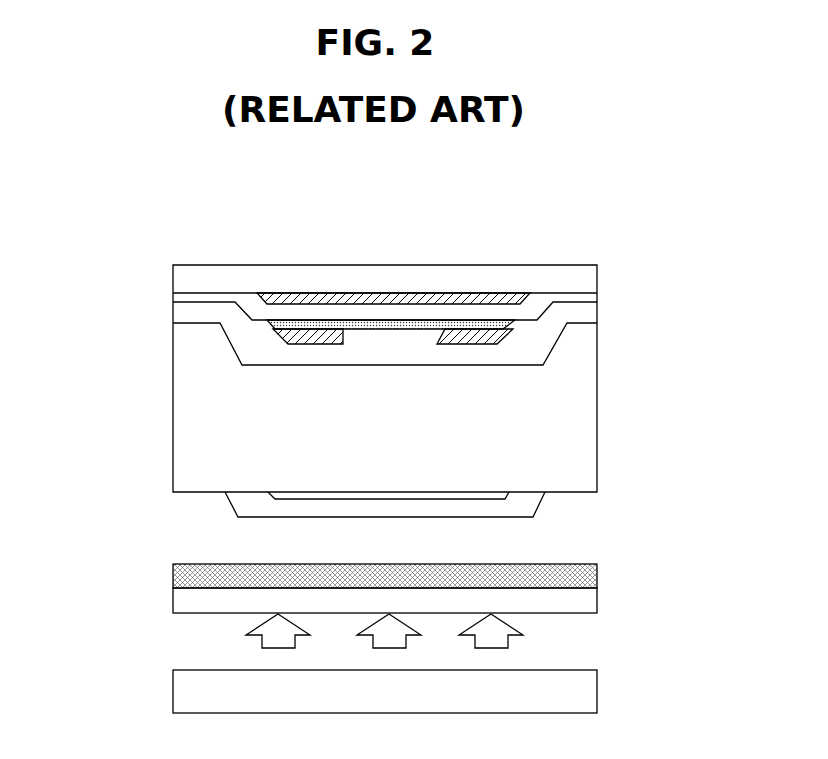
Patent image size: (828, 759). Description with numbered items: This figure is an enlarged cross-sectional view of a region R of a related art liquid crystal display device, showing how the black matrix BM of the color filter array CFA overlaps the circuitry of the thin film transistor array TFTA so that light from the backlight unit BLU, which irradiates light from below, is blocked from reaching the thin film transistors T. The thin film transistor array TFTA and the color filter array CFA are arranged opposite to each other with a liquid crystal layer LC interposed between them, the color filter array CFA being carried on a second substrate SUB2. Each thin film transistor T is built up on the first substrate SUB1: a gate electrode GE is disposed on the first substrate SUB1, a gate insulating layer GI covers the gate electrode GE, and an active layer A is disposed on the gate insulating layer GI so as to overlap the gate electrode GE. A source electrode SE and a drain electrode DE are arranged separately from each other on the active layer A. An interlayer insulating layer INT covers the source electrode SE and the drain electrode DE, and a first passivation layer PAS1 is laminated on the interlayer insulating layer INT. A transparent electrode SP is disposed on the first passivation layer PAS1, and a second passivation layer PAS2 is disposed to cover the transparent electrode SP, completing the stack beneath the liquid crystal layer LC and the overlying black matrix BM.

The region R is at (110, 199).
The thin film transistor T is at (493, 206).
The thin film transistor array TFTA is at (372, 344).
The first substrate SUB1 is at (587, 275).
The gate electrode GE is at (428, 296).
The gate insulating layer GI is at (587, 299).
The active layer A is at (363, 325).
The source electrode SE is at (302, 340).
The drain electrode DE is at (478, 333).
The interlayer insulating layer INT is at (588, 314).
The first passivation layer PAS1 is at (585, 408).
The transparent electrode SP is at (492, 490).
The second passivation layer PAS2 is at (523, 505).
The liquid crystal layer LC is at (386, 553).
The color filter array CFA is at (378, 589).
The black matrix BM is at (587, 573).
The second substrate SUB2 is at (587, 601).
The backlight unit BLU is at (152, 692).